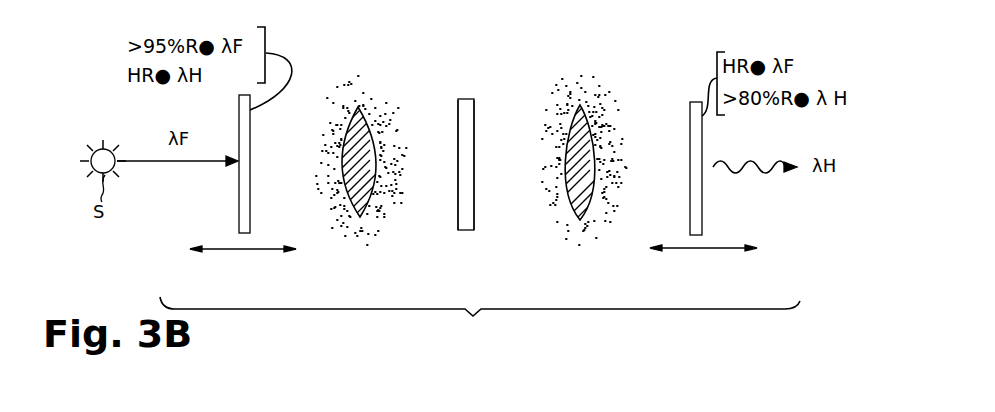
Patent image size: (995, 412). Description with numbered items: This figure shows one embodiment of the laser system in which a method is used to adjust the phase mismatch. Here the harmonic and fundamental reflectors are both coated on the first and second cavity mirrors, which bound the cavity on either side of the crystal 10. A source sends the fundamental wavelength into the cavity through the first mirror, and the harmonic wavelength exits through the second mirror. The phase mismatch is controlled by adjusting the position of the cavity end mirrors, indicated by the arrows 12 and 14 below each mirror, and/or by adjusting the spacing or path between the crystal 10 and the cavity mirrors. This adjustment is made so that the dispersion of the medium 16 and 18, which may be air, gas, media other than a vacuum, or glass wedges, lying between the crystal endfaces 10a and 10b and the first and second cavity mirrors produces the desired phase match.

The crystal 10 is at (466, 231).
The crystal endface 10a is at (458, 113).
The crystal endface 10b is at (474, 113).
The arrow 12 is at (242, 249).
The arrow 14 is at (689, 249).
The medium 16 is at (355, 232).
The medium 18 is at (570, 232).